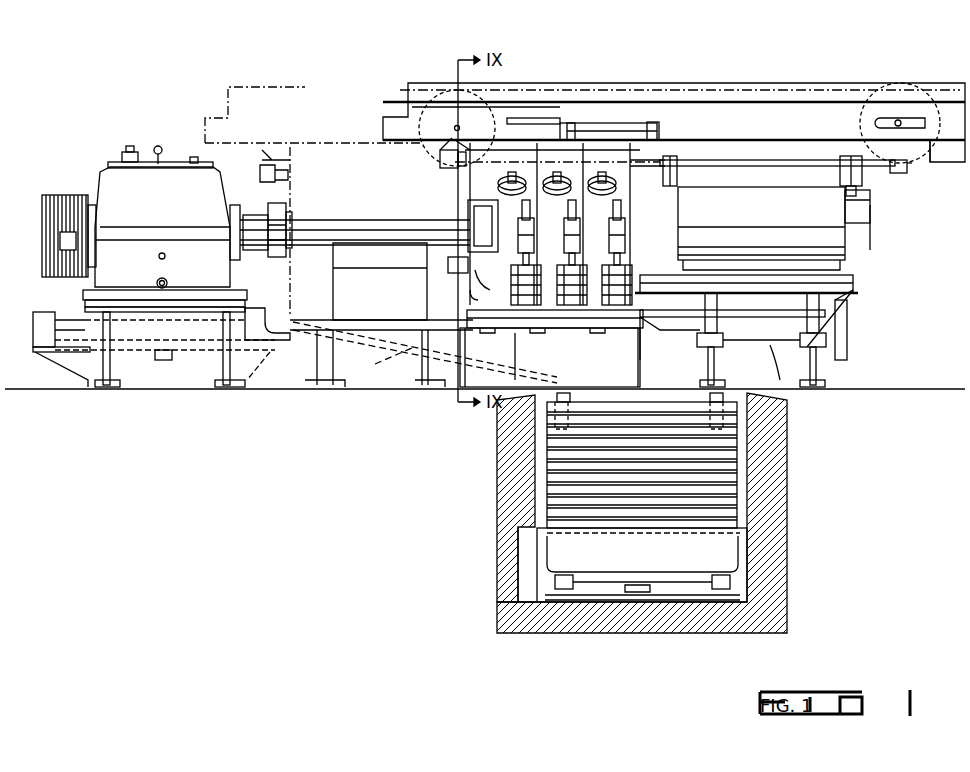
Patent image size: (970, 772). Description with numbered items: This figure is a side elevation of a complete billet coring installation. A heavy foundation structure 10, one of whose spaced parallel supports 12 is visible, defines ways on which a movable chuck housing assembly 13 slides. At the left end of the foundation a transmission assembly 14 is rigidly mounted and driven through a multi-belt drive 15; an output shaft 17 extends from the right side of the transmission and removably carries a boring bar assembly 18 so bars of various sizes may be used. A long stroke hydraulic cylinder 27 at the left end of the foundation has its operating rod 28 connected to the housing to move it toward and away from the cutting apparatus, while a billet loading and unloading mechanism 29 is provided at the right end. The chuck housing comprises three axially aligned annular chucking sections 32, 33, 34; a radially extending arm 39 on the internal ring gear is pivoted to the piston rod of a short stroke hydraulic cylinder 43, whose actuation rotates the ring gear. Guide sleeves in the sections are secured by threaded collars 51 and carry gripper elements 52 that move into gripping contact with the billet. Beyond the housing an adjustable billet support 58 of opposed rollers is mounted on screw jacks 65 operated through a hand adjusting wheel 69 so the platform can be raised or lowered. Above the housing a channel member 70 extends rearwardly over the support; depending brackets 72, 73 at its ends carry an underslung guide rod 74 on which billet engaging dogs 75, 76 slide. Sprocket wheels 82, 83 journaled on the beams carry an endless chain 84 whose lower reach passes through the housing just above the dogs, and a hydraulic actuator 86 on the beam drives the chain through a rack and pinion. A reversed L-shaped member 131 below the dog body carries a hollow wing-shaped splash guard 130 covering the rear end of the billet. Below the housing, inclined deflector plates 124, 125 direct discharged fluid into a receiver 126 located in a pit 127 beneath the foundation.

The foundation structure 10 is at (593, 377).
The support 12 is at (290, 377).
The chuck housing assembly 13 is at (590, 250).
The transmission assembly 14 is at (162, 208).
The multi-belt drive 15 is at (50, 250).
The output shaft 17 is at (248, 240).
The boring bar assembly 18 is at (366, 230).
The long stroke hydraulic cylinder 27 is at (62, 322).
The operating rod 28 is at (270, 322).
The billet loading and unloading mechanism 29 is at (760, 333).
The annular chucking section 32 is at (468, 275).
The annular chucking section 33 is at (568, 125).
The annular chucking section 34 is at (634, 155).
The arm 39 is at (624, 216).
The short stroke hydraulic cylinder 43 is at (625, 275).
The threaded collar 51 is at (627, 198).
The gripper element 52 is at (507, 180).
The adjustable billet support 58 is at (855, 292).
The screw jack 65 is at (840, 300).
The hand adjusting wheel 69 is at (843, 352).
The channel member 70 is at (690, 100).
The depending bracket 72 is at (448, 158).
The depending bracket 73 is at (902, 158).
The guide rod 74 is at (770, 165).
The billet engaging dog 75 is at (680, 180).
The billet engaging dog 76 is at (840, 172).
The sprocket wheel 82 is at (452, 92).
The sprocket wheel 83 is at (905, 85).
The endless chain 84 is at (830, 168).
The hydraulic actuator 86 is at (606, 128).
The inclined deflector plate 124 is at (425, 352).
The inclined deflector plate 125 is at (778, 347).
The receiver 126 is at (752, 515).
The pit 127 is at (750, 445).
The splash guard 130 is at (846, 208).
The reversed L-shaped member 131 is at (868, 222).